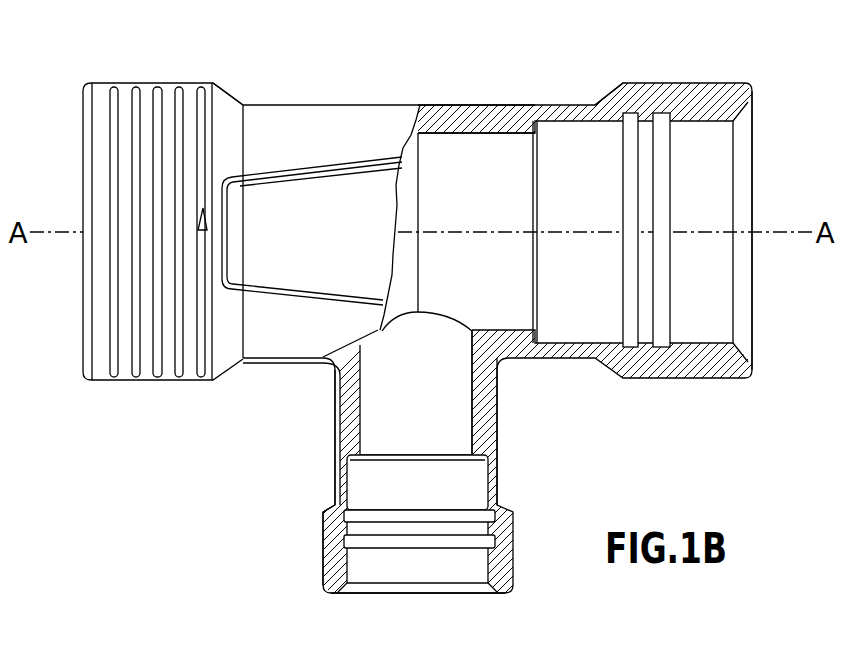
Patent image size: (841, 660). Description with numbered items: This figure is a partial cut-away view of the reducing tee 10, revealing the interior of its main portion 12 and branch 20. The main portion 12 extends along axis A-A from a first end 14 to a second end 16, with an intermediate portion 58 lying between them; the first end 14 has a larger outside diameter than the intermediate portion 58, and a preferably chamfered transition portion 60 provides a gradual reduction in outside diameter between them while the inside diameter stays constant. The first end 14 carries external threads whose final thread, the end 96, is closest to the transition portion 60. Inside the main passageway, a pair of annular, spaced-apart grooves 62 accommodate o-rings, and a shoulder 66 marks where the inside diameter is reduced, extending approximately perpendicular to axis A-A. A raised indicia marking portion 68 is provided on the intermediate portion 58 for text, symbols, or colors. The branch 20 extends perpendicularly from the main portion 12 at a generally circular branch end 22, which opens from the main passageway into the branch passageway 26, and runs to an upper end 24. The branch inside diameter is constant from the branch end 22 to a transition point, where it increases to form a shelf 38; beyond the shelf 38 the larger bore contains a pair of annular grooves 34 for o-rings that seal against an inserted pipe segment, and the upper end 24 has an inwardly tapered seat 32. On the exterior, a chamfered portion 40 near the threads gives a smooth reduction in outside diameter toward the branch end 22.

The reducing tee 10 is at (176, 467).
The main portion 12 is at (355, 105).
The first end 14 is at (82, 337).
The second end 16 is at (753, 96).
The branch 20 is at (333, 440).
The branch end 22 is at (481, 336).
The upper end 24 is at (505, 593).
The branch passageway 26 is at (402, 405).
The inwardly tapered seat 32 is at (348, 590).
The grooves 34 is at (472, 517).
The shelf 38 is at (488, 462).
The chamfered portion 40 is at (333, 500).
The intermediate portion 58 is at (490, 124).
The transition portion 60 is at (234, 100).
The grooves 62 is at (667, 140).
The shoulder 66 is at (540, 125).
The indicia marking portion 68 is at (292, 245).
The end 96 is at (206, 213).